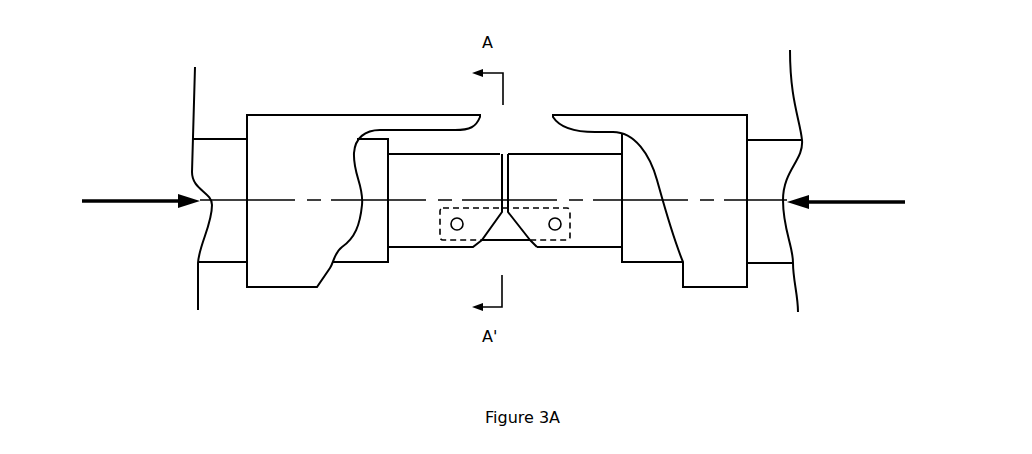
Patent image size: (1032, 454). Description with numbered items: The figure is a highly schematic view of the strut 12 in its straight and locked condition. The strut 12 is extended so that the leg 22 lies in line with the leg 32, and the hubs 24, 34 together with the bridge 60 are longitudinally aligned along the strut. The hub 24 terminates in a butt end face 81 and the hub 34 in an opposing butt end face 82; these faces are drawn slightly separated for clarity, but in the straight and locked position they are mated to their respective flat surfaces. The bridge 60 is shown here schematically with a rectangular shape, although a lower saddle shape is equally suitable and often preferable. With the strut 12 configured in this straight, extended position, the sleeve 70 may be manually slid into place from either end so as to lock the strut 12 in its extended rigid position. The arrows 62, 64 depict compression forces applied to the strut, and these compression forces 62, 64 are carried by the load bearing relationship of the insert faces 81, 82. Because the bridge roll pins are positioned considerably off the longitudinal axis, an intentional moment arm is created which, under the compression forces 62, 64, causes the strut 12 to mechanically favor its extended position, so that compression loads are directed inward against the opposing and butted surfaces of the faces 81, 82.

The strut 12 is at (337, 338).
The leg 22 is at (232, 248).
The hub 24 is at (423, 232).
The leg 32 is at (648, 247).
The hub 34 is at (582, 242).
The bridge 60 is at (495, 232).
The compression force 62 is at (140, 197).
The compression force 64 is at (842, 198).
The sleeve 70 is at (372, 117).
The butt end face 81 is at (504, 153).
The butt end face 82 is at (510, 155).